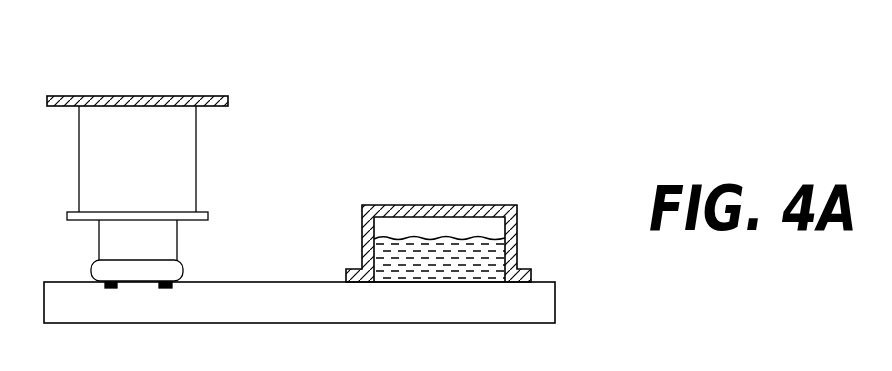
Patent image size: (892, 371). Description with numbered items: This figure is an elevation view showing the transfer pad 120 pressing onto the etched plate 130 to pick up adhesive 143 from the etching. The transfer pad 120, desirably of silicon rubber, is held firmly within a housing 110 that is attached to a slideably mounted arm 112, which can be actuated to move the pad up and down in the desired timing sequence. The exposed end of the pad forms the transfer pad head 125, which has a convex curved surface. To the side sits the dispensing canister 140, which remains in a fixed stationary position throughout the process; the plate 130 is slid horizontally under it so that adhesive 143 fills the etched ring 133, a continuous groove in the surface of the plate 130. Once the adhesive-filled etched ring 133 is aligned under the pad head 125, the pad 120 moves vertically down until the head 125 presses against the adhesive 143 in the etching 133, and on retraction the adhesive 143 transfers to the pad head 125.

The housing 110 is at (197, 180).
The slideably mounted arm 112 is at (194, 96).
The transfer pad 120 is at (178, 243).
The transfer pad head 125 is at (184, 271).
The plate 130 is at (556, 301).
The etched ring 133 is at (108, 287).
The dispensing canister 140 is at (518, 230).
The adhesive 143 is at (494, 255).